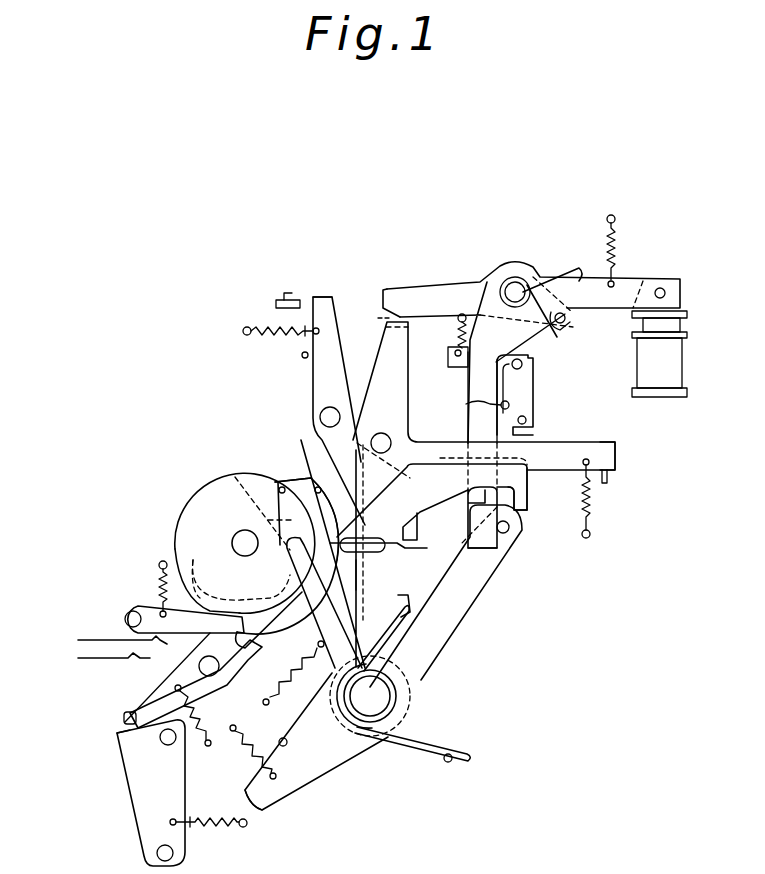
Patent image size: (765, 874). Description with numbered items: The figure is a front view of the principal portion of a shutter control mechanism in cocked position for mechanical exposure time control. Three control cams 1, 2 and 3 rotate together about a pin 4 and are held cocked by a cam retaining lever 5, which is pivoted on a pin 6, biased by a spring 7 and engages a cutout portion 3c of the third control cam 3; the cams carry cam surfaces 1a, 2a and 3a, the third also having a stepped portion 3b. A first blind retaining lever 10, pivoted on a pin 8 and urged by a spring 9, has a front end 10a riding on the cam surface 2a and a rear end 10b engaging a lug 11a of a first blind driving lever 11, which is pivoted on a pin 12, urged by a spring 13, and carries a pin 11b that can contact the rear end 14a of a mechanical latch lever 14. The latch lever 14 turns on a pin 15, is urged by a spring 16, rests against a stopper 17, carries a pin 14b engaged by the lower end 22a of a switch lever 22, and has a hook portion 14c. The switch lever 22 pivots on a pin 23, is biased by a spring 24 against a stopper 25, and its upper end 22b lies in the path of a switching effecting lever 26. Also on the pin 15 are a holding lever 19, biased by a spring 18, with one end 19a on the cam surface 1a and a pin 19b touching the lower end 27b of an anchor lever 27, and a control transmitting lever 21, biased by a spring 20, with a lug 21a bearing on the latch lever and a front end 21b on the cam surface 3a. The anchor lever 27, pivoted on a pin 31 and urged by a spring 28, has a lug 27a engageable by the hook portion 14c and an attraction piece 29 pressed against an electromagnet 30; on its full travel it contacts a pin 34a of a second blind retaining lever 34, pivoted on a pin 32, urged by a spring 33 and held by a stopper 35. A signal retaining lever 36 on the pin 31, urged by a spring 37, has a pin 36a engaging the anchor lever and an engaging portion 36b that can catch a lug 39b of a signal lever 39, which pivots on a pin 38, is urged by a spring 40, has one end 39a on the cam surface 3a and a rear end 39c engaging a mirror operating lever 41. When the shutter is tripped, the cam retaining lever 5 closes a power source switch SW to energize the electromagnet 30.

The first control cam 1 is at (198, 488).
The cam surface 1a is at (262, 494).
The second control cam 2 is at (207, 573).
The cam surface 2a is at (265, 515).
The third control cam 3 is at (300, 625).
The cam surface 3a is at (325, 503).
The cam edge 3b is at (291, 481).
The cutout portion 3c is at (250, 648).
The pin 4 is at (236, 537).
The cam retaining lever 5 is at (174, 617).
The pin 6 is at (125, 620).
The spring 7 is at (158, 582).
The pin 8 is at (221, 674).
The spring 9 is at (201, 712).
The first blind retaining lever 10 is at (160, 688).
The front end 10a is at (258, 572).
The rear end 10b is at (126, 712).
The first blind driving lever 11 is at (127, 785).
The lug 11a is at (115, 735).
The pin 11b is at (178, 743).
The pin 12 is at (174, 855).
The spring 13 is at (208, 818).
The mechanical latch lever 14 is at (340, 766).
The rear end 14a is at (258, 812).
The pin 14b is at (385, 506).
The hook portion 14c is at (528, 508).
The pin 15 is at (392, 705).
The spring 16 is at (252, 758).
The stopper 17 is at (279, 742).
The spring 18 is at (296, 688).
The holding lever 19 is at (424, 679).
The one end 19a is at (310, 540).
The pin 19b is at (509, 528).
The spring 20 is at (413, 745).
The control transmitting lever 21 is at (346, 611).
The lug 21a is at (395, 607).
The front end 21b is at (368, 578).
The switch lever 22 is at (316, 381).
The lower end 22a is at (412, 522).
The upper end 22b is at (322, 299).
The pin 23 is at (320, 416).
The spring 24 is at (270, 328).
The stopper 25 is at (302, 355).
The switching effecting lever 26 is at (285, 285).
The anchor lever 27 is at (627, 286).
The lug 27a is at (528, 485).
The lower end 27b is at (508, 547).
The spring 28 is at (607, 246).
The attraction piece 29 is at (682, 306).
The electromagnet 30 is at (672, 371).
The pin 31 is at (515, 277).
The pin 32 is at (523, 366).
The spring 33 is at (457, 334).
The second blind retaining lever 34 is at (533, 390).
The pin 34a is at (526, 421).
The stopper 35 is at (473, 402).
The signal retaining lever 36 is at (472, 286).
The pin 36a is at (566, 325).
The engaging portion 36b is at (398, 291).
The spring 37 is at (549, 282).
The pin 38 is at (391, 440).
The signal lever 39 is at (398, 380).
The one end 39a is at (405, 547).
The lug 39b is at (364, 315).
The rear end 39c is at (612, 442).
The spring 40 is at (592, 512).
The mirror operating lever 41 is at (608, 479).
The power source switch SW is at (103, 650).